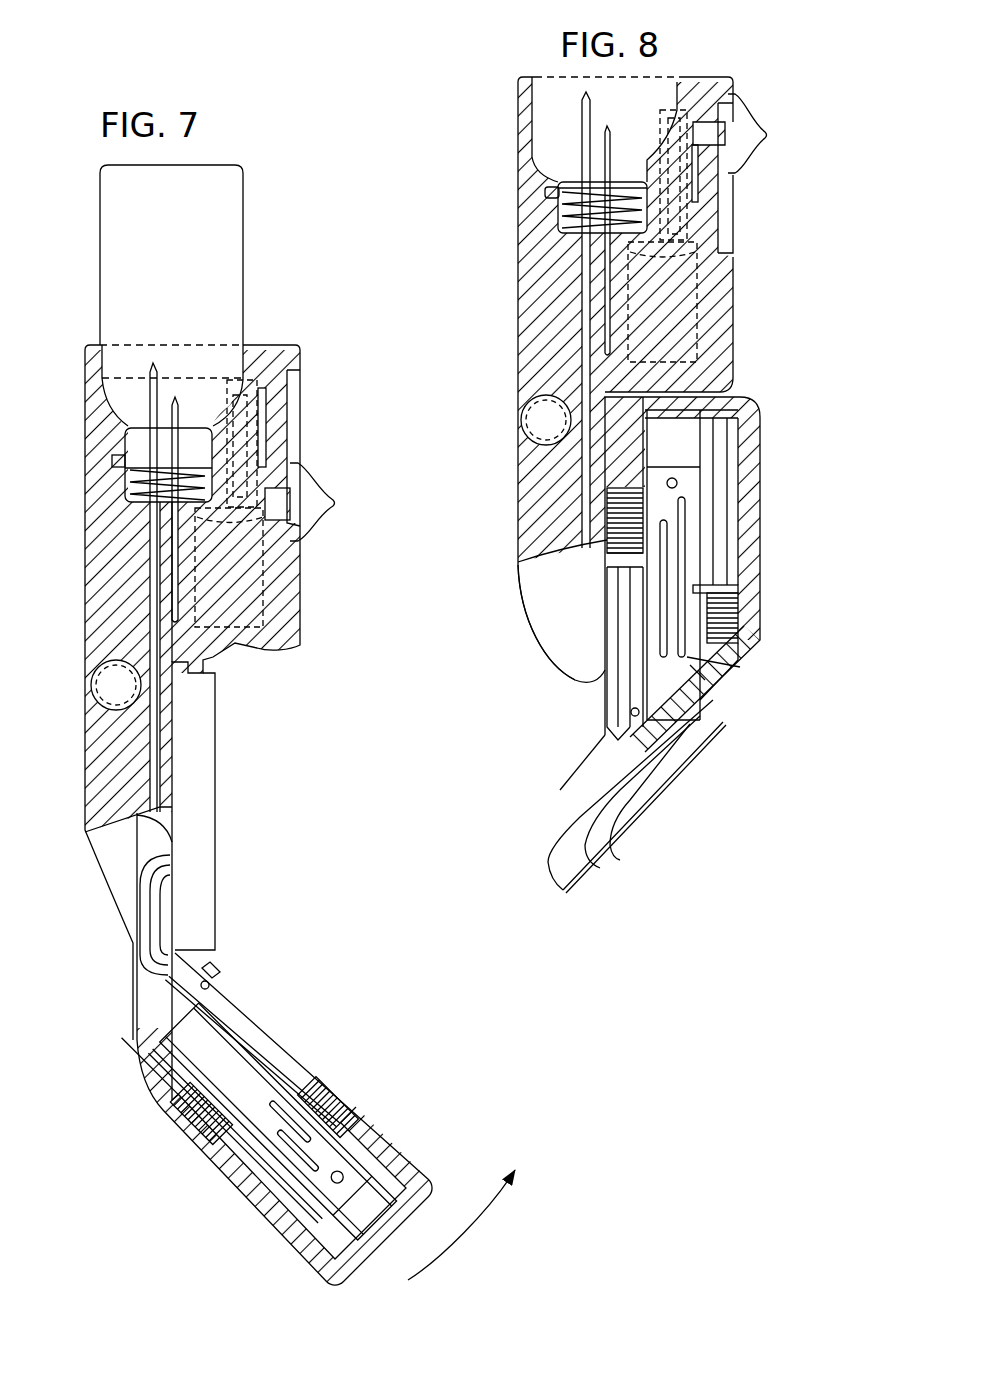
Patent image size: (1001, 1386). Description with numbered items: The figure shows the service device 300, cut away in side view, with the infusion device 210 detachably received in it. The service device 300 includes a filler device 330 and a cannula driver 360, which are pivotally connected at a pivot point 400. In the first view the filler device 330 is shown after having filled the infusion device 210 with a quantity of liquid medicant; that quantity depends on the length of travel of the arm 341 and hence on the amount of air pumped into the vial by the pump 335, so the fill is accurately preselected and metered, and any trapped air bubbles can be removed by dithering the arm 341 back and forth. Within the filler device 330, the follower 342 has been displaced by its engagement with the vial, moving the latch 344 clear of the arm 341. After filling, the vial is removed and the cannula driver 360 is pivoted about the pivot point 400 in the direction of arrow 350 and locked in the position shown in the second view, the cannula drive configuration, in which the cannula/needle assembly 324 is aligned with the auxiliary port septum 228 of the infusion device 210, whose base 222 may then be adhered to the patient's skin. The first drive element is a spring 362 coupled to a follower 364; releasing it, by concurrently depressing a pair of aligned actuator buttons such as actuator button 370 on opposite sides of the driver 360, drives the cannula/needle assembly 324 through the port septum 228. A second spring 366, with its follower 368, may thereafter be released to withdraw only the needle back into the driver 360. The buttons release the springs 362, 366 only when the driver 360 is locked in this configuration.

In FIG. 7, the service device 300 is at (330, 327).
In FIG. 8, the service device 300 is at (762, 58).
In FIG. 7, the filler device 330 is at (350, 428).
In FIG. 8, the filler device 330 is at (770, 193).
In FIG. 7, the pump 335 is at (263, 567).
In FIG. 8, the pump 335 is at (662, 302).
In FIG. 7, the arm 341 is at (327, 472).
In FIG. 7, the follower 342 is at (112, 460).
In FIG. 8, the follower 342 is at (545, 192).
In FIG. 7, the latch 344 is at (300, 408).
In FIG. 8, the latch 344 is at (673, 175).
In FIG. 7, the arrow 350 is at (484, 1221).
In FIG. 7, the cannula driver 360 is at (304, 1028).
In FIG. 8, the cannula driver 360 is at (787, 498).
In FIG. 8, the first drive element 362 is at (614, 522).
In FIG. 8, the follower 364 is at (612, 558).
In FIG. 8, the second drive element 366 is at (738, 620).
In FIG. 8, the follower 368 is at (740, 589).
In FIG. 8, the actuator button 370 is at (530, 390).
In FIG. 7, the pivot point 400 is at (209, 983).
In FIG. 8, the infusion device 210 is at (565, 846).
In FIG. 8, the base 222 is at (578, 878).
In FIG. 8, the auxiliary port septum 228 is at (682, 727).
In FIG. 8, the cannula/needle assembly 324 is at (713, 693).